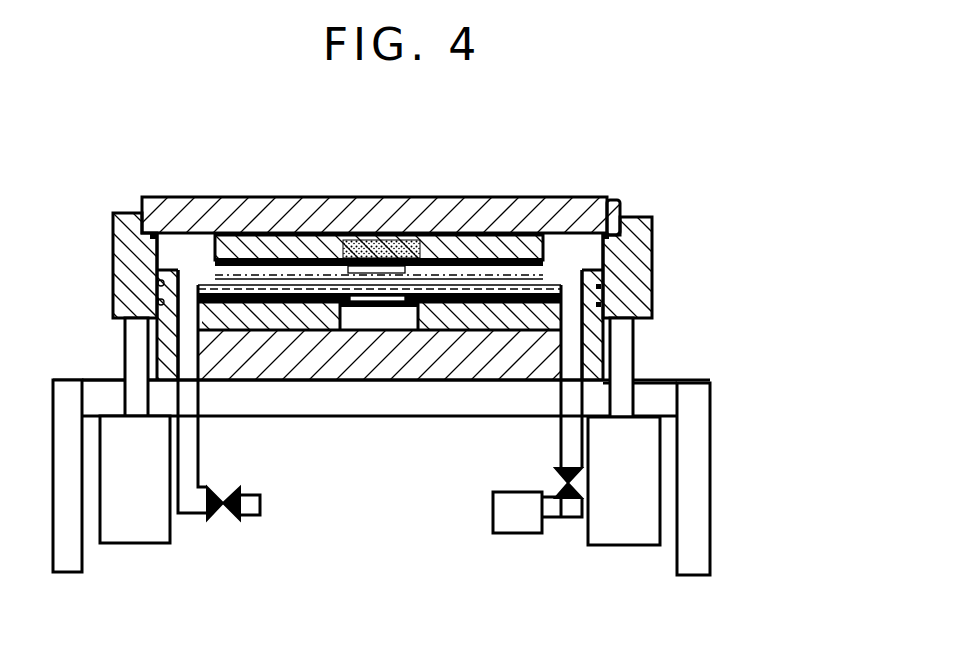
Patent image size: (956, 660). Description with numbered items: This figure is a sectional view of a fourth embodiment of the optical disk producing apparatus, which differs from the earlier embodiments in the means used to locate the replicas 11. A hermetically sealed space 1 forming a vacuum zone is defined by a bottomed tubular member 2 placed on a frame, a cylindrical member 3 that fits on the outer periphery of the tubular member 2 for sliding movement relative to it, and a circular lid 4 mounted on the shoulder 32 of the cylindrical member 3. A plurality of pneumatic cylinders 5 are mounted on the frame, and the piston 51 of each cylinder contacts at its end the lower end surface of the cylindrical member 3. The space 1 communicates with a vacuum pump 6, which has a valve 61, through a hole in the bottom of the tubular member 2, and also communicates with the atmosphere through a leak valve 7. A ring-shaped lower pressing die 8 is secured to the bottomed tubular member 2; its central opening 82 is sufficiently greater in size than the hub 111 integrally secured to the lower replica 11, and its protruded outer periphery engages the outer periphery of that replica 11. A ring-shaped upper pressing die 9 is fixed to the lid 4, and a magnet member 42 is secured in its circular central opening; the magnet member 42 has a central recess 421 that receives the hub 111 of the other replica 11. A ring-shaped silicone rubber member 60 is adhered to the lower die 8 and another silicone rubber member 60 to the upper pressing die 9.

The hermetically sealed space 1 is at (188, 251).
The bottomed tubular member 2 is at (243, 355).
The cylindrical member 3 is at (654, 257).
The circular lid 4 is at (482, 193).
The pneumatic cylinders 5 is at (130, 544).
The vacuum pump 6 is at (513, 534).
The leak valve 7 is at (213, 522).
The lower pressing die 8 is at (287, 308).
The upper pressing die 9 is at (500, 246).
The replicas 11 is at (258, 291).
The shoulder 32 is at (607, 236).
The magnet member 42 is at (378, 240).
The piston 51 is at (125, 345).
The silicone rubber member 60 is at (238, 293).
The valve 61 is at (555, 480).
The central opening 82 is at (343, 302).
The hub 111 is at (418, 280).
The central recess 421 is at (344, 262).